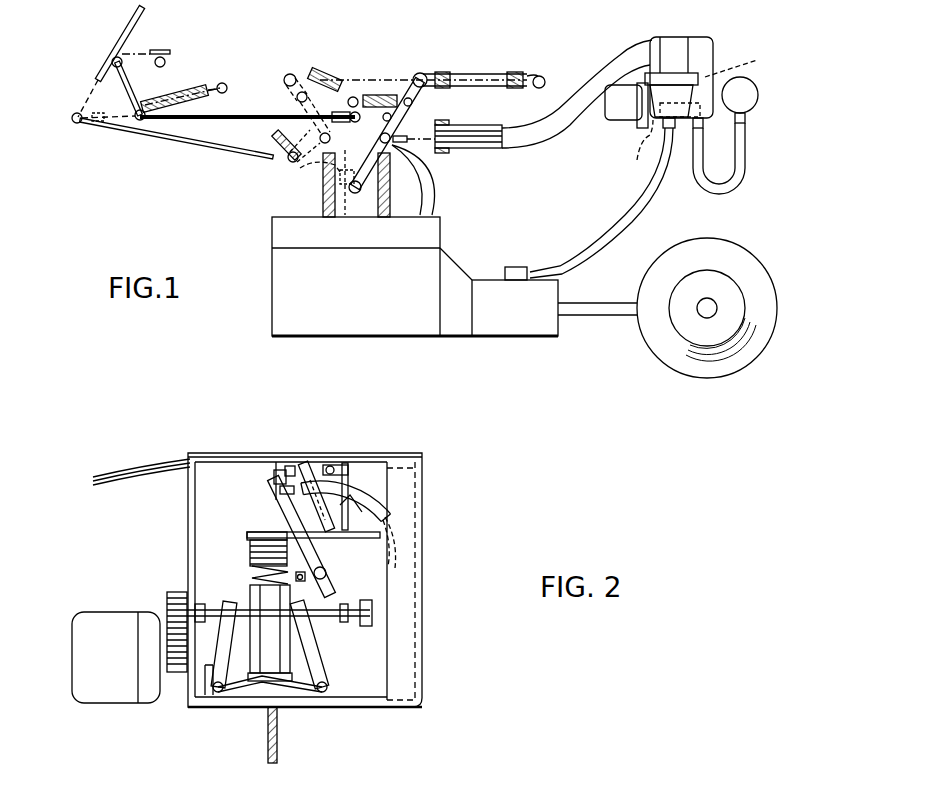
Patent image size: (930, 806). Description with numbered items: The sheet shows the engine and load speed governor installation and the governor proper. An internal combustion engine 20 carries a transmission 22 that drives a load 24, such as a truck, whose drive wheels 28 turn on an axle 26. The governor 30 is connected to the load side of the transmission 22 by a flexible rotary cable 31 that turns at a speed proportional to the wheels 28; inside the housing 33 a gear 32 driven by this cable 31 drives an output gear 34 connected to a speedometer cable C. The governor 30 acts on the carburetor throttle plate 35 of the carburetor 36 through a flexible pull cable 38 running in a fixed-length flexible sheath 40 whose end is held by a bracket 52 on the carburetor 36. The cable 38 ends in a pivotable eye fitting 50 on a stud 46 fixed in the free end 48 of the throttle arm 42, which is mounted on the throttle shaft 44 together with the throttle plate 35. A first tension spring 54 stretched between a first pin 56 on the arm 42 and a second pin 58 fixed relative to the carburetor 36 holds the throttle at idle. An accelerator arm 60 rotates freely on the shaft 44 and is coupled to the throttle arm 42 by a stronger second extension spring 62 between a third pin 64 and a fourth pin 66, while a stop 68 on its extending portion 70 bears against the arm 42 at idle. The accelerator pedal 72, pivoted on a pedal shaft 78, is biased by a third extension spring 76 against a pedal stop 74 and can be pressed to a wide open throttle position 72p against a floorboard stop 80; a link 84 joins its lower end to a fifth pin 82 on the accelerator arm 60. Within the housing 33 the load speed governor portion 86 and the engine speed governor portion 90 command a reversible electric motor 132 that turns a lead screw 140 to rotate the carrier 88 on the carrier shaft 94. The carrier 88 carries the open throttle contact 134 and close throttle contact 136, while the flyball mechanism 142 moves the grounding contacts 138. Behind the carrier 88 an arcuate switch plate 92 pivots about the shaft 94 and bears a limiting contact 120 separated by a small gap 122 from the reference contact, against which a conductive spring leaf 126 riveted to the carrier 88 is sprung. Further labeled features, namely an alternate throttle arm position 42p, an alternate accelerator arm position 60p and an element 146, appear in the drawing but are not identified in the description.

In FIG. 1, the internal combustion engine 20 is at (272, 305).
In FIG. 1, the transmission 22 is at (505, 336).
In FIG. 1, the load 24 is at (669, 338).
In FIG. 1, the axle 26 is at (717, 312).
In FIG. 1, the drive wheels 28 is at (697, 377).
In FIG. 1, the governor 30 is at (658, 149).
In FIG. 2, the governor 30 is at (372, 384).
In FIG. 1, the flexible rotary cable 31 is at (660, 197).
In FIG. 1, the gear 32 is at (640, 160).
In FIG. 1, the housing 33 is at (652, 40).
In FIG. 2, the housing 33 is at (423, 695).
In FIG. 1, the output gear 34 is at (757, 60).
In FIG. 1, the carburetor throttle plate 35 is at (347, 200).
In FIG. 1, the carburetor 36 is at (323, 198).
In FIG. 1, the flexible pull cable 38 is at (490, 147).
In FIG. 2, the flexible pull cable 38 is at (222, 440).
In FIG. 1, the flexible sheath 40 is at (565, 125).
In FIG. 2, the flexible sheath 40 is at (150, 463).
In FIG. 1, the throttle arm 42 is at (412, 120).
In FIG. 1, the control rod alternate position 42p is at (285, 100).
In FIG. 1, the throttle shaft 44 is at (395, 158).
In FIG. 1, the stud 46 is at (420, 172).
In FIG. 1, the free end 48 is at (498, 69).
In FIG. 1, the pivotable eye fitting 50 is at (448, 163).
In FIG. 1, the bracket 52 is at (460, 150).
In FIG. 1, the first tension spring 54 is at (507, 73).
In FIG. 1, the first pin 56 is at (478, 48).
In FIG. 1, the second pin 58 is at (543, 78).
In FIG. 1, the accelerator arm 60 is at (353, 92).
In FIG. 1, the spring alternate position 60p is at (322, 175).
In FIG. 1, the second extension spring 62 is at (400, 78).
In FIG. 1, the third pin 64 is at (446, 52).
In FIG. 1, the fourth pin 66 is at (383, 77).
In FIG. 1, the stop 68 is at (390, 118).
In FIG. 1, the extending portion 70 is at (361, 118).
In FIG. 1, the accelerator pedal 72 is at (116, 40).
In FIG. 1, the wide open throttle position 72p is at (155, 48).
In FIG. 1, the pedal stop 74 is at (146, 104).
In FIG. 1, the third extension spring 76 is at (208, 92).
In FIG. 1, the pedal shaft 78 is at (128, 84).
In FIG. 1, the floorboard stop 80 is at (165, 63).
In FIG. 1, the fifth pin 82 is at (345, 96).
In FIG. 1, the link 84 is at (235, 138).
In FIG. 2, the load speed governor portion 86 is at (228, 715).
In FIG. 2, the carrier 88 is at (290, 510).
In FIG. 2, the engine speed governor portion 90 is at (405, 548).
In FIG. 2, the arcuate switch plate 92 is at (358, 487).
In FIG. 2, the carrier shaft 94 is at (326, 575).
In FIG. 2, the limiting contact 120 is at (360, 500).
In FIG. 2, the gap 122 is at (360, 504).
In FIG. 2, the spring leaf 126 is at (290, 525).
In FIG. 1, the reversible electric motor 132 is at (605, 100).
In FIG. 2, the reversible electric motor 132 is at (87, 703).
In FIG. 2, the open throttle contact 134 is at (275, 470).
In FIG. 2, the close throttle contact 136 is at (312, 464).
In FIG. 2, the grounding contacts 138 is at (280, 462).
In FIG. 2, the lead screw 140 is at (330, 637).
In FIG. 2, the flyball mechanism 142 is at (248, 548).
In FIG. 2, the cam 146 is at (338, 655).
In FIG. 1, the speedometer cable C is at (745, 178).